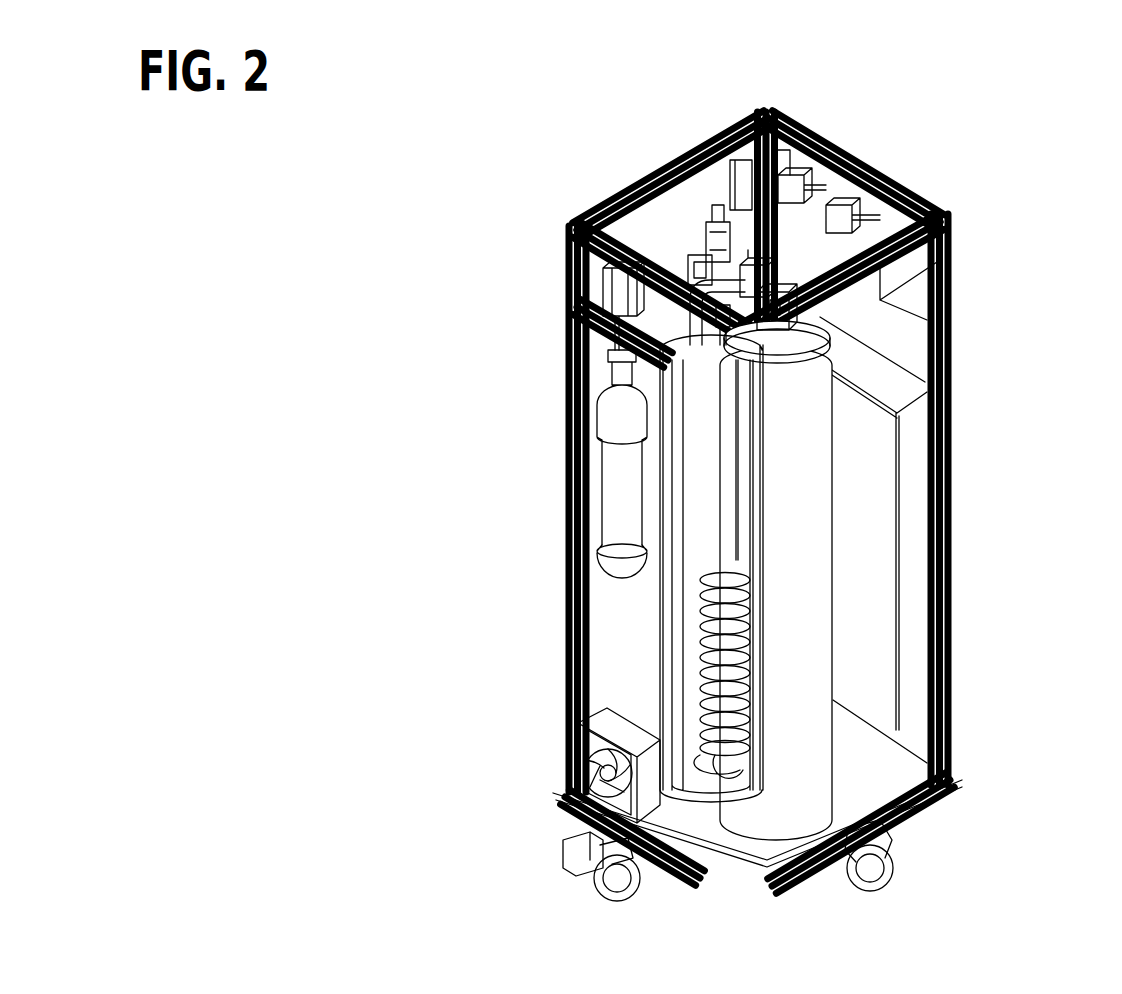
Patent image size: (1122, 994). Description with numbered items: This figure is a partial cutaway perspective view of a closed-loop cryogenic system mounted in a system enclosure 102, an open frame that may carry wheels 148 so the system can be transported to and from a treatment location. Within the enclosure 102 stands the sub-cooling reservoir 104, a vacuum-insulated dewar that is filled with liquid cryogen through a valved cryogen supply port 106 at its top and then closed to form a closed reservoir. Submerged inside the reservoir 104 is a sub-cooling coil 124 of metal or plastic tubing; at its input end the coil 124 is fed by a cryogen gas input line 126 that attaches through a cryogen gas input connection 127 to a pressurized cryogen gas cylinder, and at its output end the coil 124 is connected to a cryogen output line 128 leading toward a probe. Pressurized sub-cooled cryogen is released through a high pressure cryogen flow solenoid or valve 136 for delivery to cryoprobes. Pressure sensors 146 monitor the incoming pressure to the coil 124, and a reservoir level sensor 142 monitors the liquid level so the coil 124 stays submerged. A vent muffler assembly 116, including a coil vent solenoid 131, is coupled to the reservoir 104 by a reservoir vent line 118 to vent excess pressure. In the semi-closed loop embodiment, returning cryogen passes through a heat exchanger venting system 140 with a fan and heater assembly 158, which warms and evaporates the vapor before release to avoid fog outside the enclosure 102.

The system enclosure 102 is at (562, 687).
The sub-cooling reservoir 104 is at (819, 612).
The valved cryogen supply port 106 is at (787, 313).
The vent muffler assembly 116 is at (620, 478).
The reservoir vent line 118 is at (697, 263).
The sub-cooling coil 124 is at (707, 665).
The cryogen gas input line 126 is at (717, 505).
The cryogen gas input connection 127 is at (720, 317).
The cryogen output line 128 is at (737, 552).
The coil vent solenoid 131 is at (620, 290).
The high pressure cryogen flow solenoid or valve 136 is at (837, 213).
The heat exchanger venting system 140 is at (620, 589).
The reservoir level sensor 142 is at (750, 280).
The pressure sensors 146 is at (717, 222).
The wheels 148 is at (583, 885).
The fan and heater assembly 158 is at (587, 763).